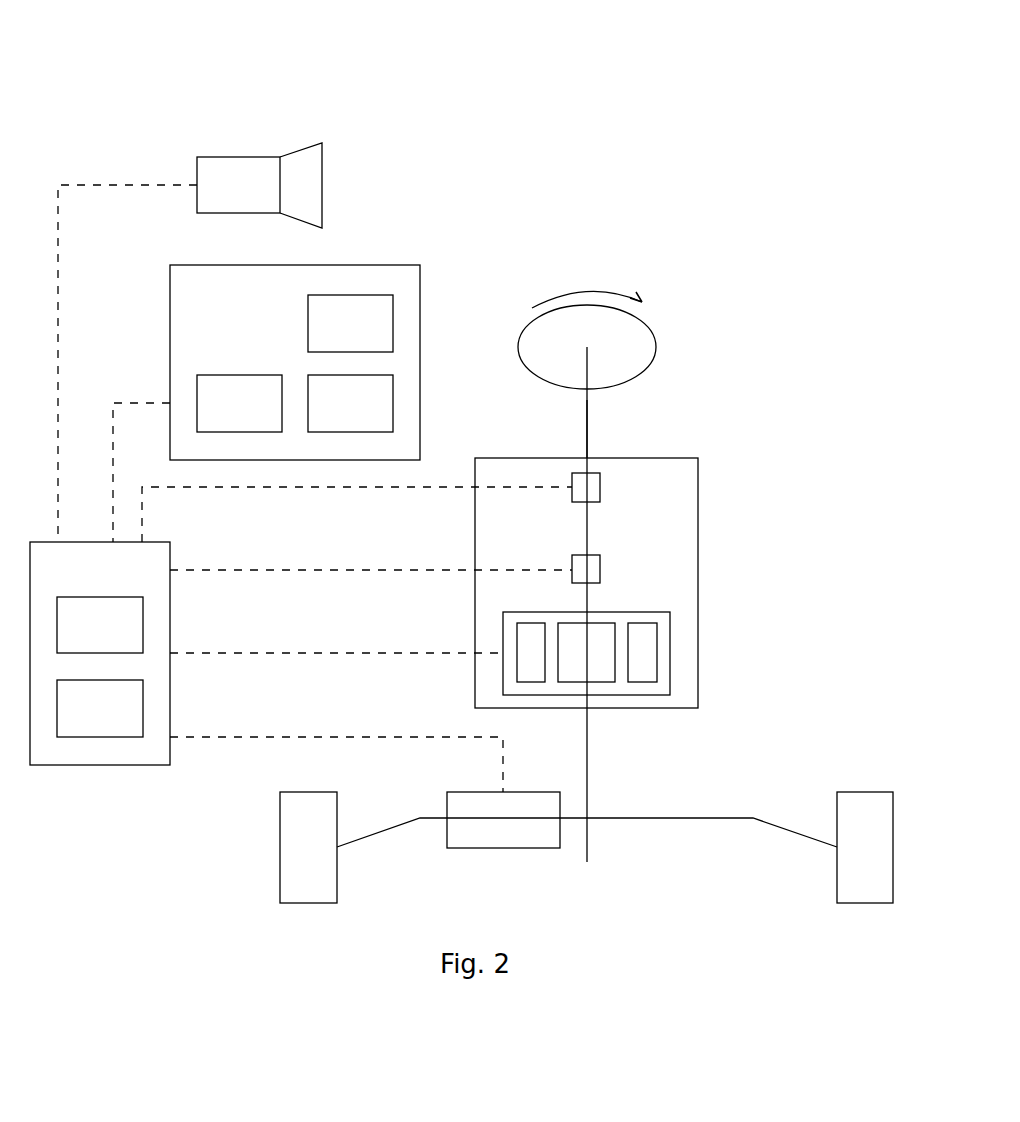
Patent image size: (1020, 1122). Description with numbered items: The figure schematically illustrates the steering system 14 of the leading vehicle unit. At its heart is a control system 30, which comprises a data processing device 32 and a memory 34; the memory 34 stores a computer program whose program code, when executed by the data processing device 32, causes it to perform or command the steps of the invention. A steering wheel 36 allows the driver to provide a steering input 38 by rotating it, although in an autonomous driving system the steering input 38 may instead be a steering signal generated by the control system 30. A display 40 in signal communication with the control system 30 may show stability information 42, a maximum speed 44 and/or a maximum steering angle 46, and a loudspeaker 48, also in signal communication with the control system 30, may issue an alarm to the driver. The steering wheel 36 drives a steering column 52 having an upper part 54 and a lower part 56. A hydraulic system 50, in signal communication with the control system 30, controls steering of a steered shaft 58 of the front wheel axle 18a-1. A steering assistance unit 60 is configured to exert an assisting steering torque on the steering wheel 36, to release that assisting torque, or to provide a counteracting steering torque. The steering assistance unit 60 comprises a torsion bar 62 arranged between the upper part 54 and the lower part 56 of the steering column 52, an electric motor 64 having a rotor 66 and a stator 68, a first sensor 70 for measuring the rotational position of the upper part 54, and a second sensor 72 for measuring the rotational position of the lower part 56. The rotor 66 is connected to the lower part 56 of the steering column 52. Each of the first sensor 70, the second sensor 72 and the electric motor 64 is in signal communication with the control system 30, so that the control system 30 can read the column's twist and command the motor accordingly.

The steering system 14 is at (211, 70).
The front wheel axle 18a-1 is at (232, 832).
The control system 30 is at (84, 584).
The data processing device 32 is at (84, 639).
The memory 34 is at (84, 724).
The steering wheel 36 is at (520, 340).
The steering input 38 is at (568, 293).
The display 40 is at (222, 339).
The stability information 42 is at (334, 339).
The maximum speed 44 is at (222, 419).
The maximum steering angle 46 is at (334, 419).
The loudspeaker 48 is at (222, 199).
The hydraulic system 50 is at (501, 832).
The steering column 52 is at (585, 428).
The upper part 54 is at (588, 441).
The lower part 56 is at (588, 761).
The steered shaft 58 is at (650, 822).
The steering assistance unit 60 is at (680, 476).
The torsion bar 62 is at (585, 539).
The electric motor 64 is at (672, 656).
The rotor 66 is at (600, 638).
The stator 68 is at (644, 638).
The first sensor 70 is at (601, 487).
The second sensor 72 is at (601, 570).